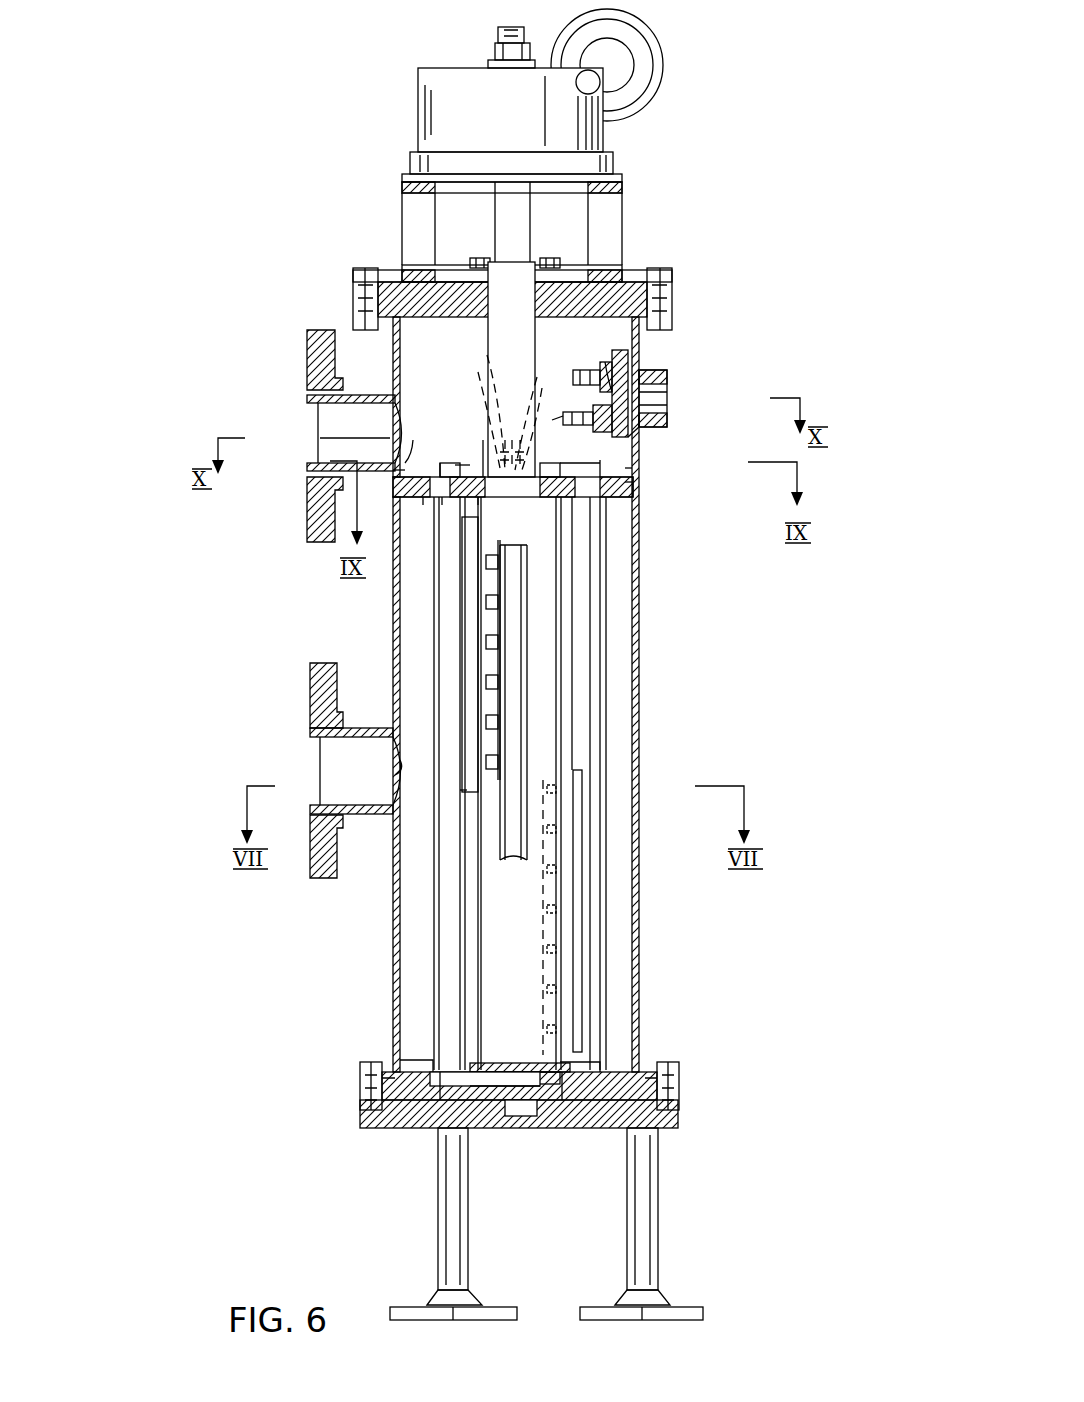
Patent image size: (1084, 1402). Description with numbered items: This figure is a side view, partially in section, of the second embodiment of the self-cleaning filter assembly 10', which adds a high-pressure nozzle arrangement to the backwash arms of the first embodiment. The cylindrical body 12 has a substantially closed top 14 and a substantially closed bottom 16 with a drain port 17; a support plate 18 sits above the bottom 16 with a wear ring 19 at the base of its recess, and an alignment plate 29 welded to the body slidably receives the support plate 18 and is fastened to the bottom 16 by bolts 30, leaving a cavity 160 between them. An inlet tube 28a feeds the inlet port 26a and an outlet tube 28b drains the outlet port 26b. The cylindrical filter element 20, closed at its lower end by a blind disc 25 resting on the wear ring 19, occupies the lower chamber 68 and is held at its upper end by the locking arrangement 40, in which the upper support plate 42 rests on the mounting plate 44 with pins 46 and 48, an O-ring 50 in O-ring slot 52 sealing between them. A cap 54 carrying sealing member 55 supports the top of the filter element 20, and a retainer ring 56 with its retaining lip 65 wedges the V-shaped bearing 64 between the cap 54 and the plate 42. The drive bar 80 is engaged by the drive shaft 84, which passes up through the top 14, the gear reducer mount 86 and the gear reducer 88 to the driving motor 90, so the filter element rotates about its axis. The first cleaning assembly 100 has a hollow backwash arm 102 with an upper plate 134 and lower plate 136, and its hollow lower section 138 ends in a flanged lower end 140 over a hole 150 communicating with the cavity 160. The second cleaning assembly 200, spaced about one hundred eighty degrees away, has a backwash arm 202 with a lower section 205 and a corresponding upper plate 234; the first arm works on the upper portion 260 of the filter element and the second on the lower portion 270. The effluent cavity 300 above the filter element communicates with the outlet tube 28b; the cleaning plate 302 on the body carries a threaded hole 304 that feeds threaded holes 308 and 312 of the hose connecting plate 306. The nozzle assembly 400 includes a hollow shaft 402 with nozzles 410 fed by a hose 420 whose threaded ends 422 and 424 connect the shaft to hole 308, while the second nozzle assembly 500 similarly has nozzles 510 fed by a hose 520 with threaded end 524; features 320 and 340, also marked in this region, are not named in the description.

The filter assembly 10' is at (728, 60).
The cylindrical body 12 is at (636, 582).
The top 14 is at (627, 272).
The bottom 16 is at (680, 1110).
The drain port 17 is at (513, 1122).
The support plate 18 is at (625, 1095).
The wear ring 19 is at (562, 1083).
The filter element 20 is at (572, 690).
The blind disc 25 is at (487, 1055).
The inlet port 26a is at (400, 775).
The outlet port 26b is at (320, 438).
The inlet tube 28a is at (360, 727).
The outlet tube 28b is at (353, 398).
The alignment plate 29 is at (395, 1068).
The bolts 30 is at (370, 1063).
The locking arrangement 40 is at (633, 462).
The upper support plate 42 is at (413, 463).
The mounting plate 44 is at (637, 482).
The pin 46 is at (410, 462).
The pin 48 is at (637, 472).
The O-ring 50 is at (423, 498).
The O-ring slot 52 is at (443, 500).
The cap 54 is at (478, 500).
The sealing member 55 is at (562, 505).
The retainer ring 56 is at (626, 466).
The annular bearing 64 is at (440, 478).
The retaining lip 65 is at (465, 467).
The lower chamber 68 is at (418, 965).
The drive bar 80 is at (523, 505).
The drive shaft 84 is at (487, 352).
The gear reducer mount 86 is at (625, 184).
The gear reducer 88 is at (608, 123).
The driving motor 90 is at (640, 24).
The first cleaning assembly 100 is at (459, 629).
The backwash arm 102 is at (483, 657).
The upper plate 134 is at (480, 510).
The lower plate 136 is at (467, 805).
The lower section 138 is at (443, 947).
The flanged lower end 140 is at (437, 1065).
The hole 150 is at (443, 1082).
The cavity 160 is at (475, 1092).
The second cleaning assembly 200 is at (642, 679).
The backwash arm 202 is at (600, 716).
The lower section 205 is at (555, 932).
The upper plate 234 is at (637, 755).
The upper portion 260 is at (545, 650).
The lower portion 270 is at (500, 1010).
The effluent cavity 300 is at (675, 291).
The high pressure fluid cleaning plate 302 is at (640, 372).
The threaded hole 304 is at (652, 407).
The hose connecting plate 306 is at (573, 380).
The threaded hole 308 is at (627, 354).
The threaded hole 312 is at (650, 424).
The port passage 320 is at (668, 400).
The spray conduit 340 is at (483, 465).
The nozzle assembly 400 is at (528, 613).
The hollow shaft 402 is at (580, 825).
The nozzles 410 is at (483, 630).
The hose 420 is at (486, 358).
The threaded end 422 is at (480, 380).
The threaded end 424 is at (607, 362).
The second nozzle assembly 500 is at (566, 970).
The nozzles 510 is at (563, 1017).
The hose 520 is at (605, 410).
The threaded end 524 is at (600, 430).